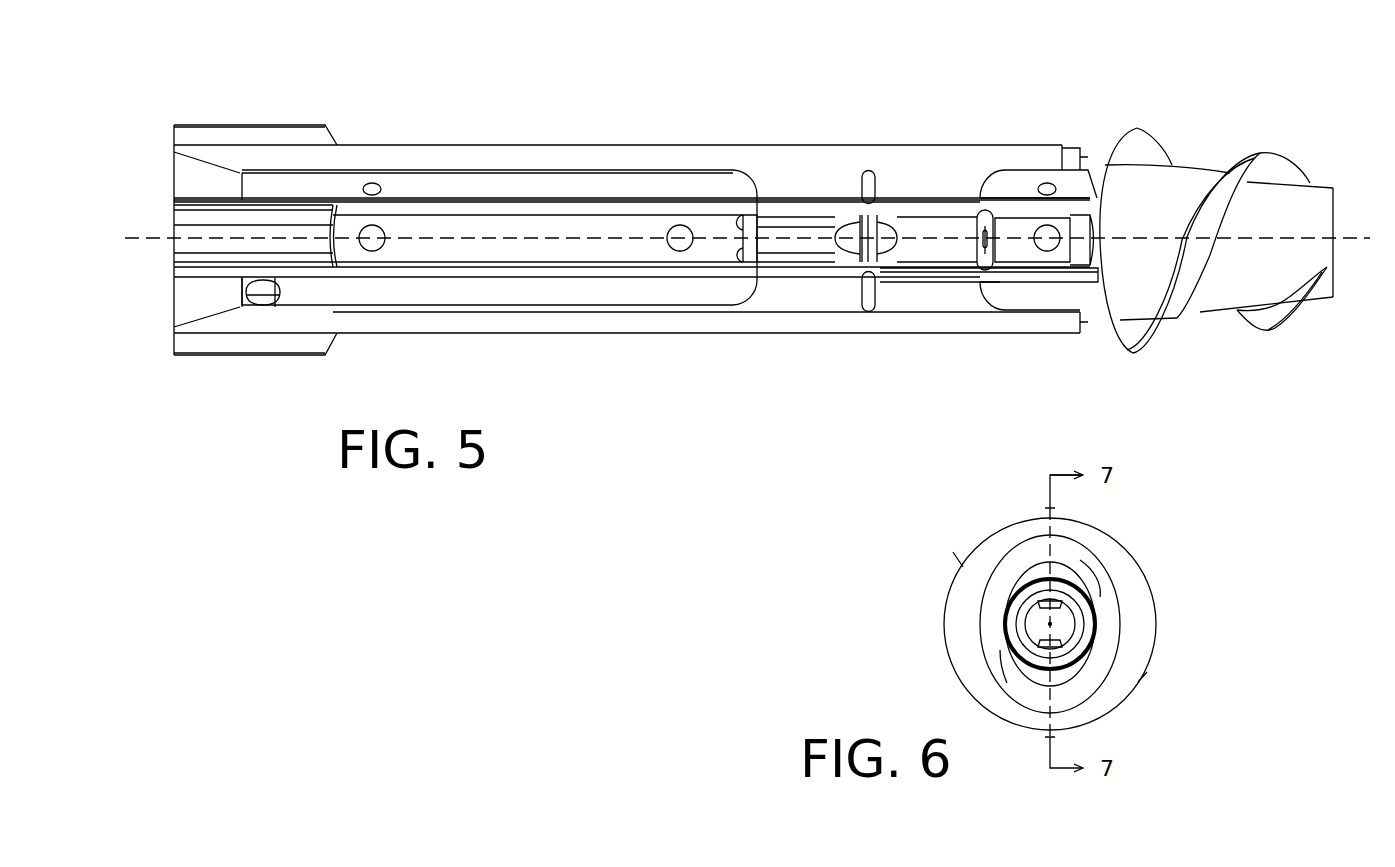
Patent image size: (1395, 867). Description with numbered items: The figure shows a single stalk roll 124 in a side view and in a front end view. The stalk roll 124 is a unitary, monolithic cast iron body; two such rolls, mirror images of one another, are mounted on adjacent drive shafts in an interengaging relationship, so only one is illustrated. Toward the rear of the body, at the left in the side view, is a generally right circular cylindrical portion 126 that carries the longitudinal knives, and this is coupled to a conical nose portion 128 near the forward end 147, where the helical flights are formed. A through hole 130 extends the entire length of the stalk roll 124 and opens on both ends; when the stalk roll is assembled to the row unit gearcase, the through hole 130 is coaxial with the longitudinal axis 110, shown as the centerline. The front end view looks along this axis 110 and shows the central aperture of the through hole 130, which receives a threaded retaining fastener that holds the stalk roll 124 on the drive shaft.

In FIG. 5, the longitudinal axis 110 is at (457, 238).
In FIG. 6, the longitudinal axis 110 is at (1050, 623).
In FIG. 5, the stalk roll 124 is at (694, 112).
In FIG. 6, the stalk roll 124 is at (942, 518).
In FIG. 5, the right circular cylindrical portion 126 is at (557, 145).
In FIG. 5, the conical nose portion 128 is at (1242, 112).
In FIG. 6, the conical nose portion 128 is at (1078, 563).
In FIG. 6, the through hole 130 is at (1063, 626).
In FIG. 5, the forward end 147 is at (1333, 206).